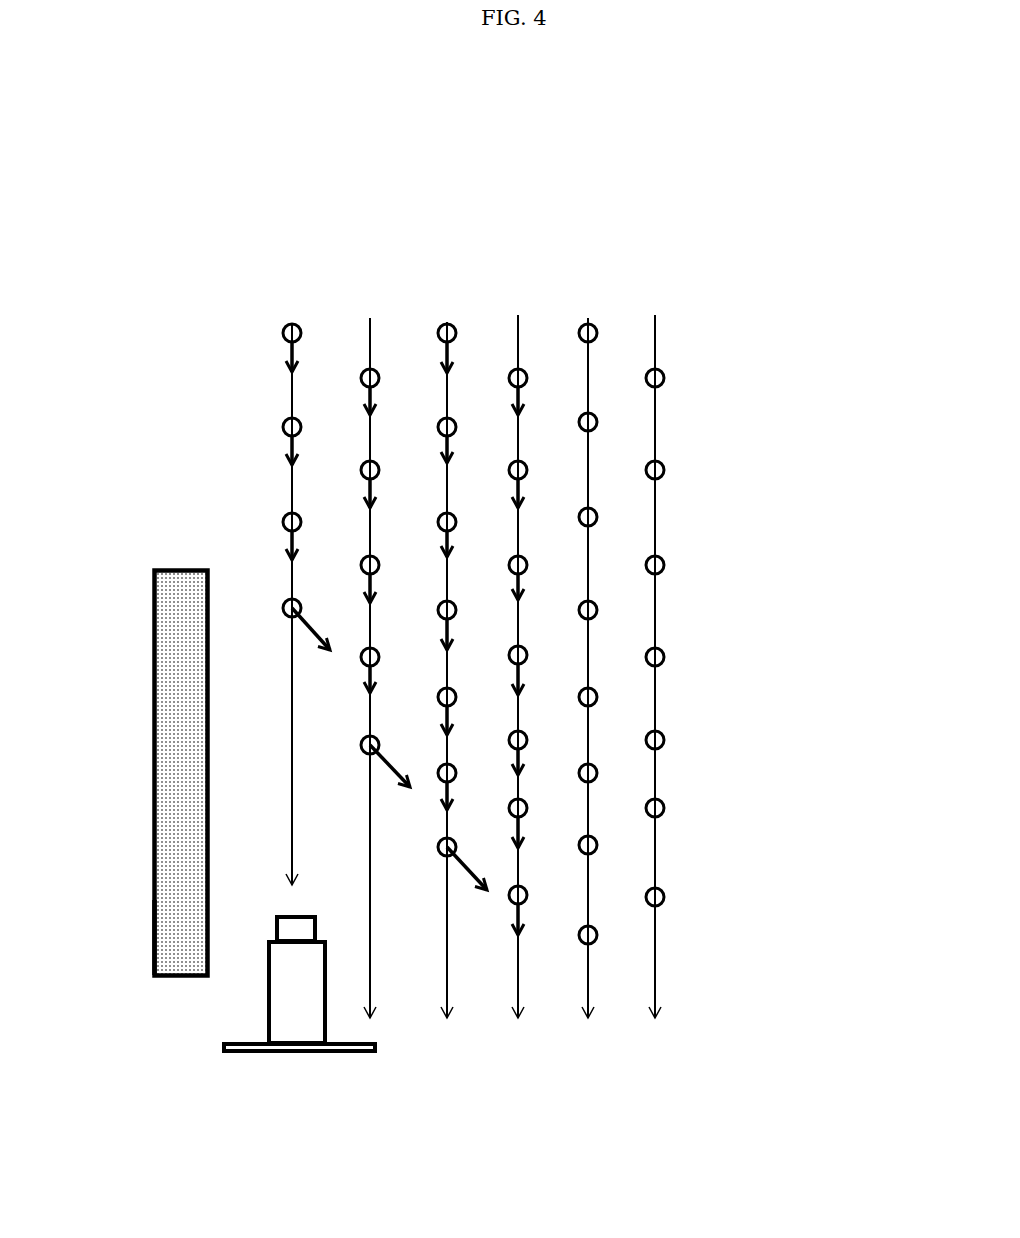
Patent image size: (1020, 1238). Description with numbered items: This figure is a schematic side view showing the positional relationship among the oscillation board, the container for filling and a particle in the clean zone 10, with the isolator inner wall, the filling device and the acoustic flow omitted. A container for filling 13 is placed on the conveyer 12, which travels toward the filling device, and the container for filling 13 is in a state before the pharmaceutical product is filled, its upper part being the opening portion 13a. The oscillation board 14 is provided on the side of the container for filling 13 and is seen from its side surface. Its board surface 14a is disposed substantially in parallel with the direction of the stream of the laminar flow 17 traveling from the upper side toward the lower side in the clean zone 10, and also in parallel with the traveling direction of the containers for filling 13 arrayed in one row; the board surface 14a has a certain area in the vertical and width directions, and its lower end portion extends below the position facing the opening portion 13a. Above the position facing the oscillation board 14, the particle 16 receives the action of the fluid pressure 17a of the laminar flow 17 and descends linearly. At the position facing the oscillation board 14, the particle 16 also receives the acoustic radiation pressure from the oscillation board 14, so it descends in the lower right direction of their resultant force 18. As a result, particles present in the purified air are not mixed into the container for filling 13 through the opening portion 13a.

The clean zone 10 is at (712, 400).
The conveyer 12 is at (300, 1053).
The container for filling 13 is at (295, 992).
The opening portion 13a is at (295, 912).
The oscillation board 14 is at (185, 705).
The board surface 14a is at (232, 808).
The particle 16 is at (283, 334).
The laminar flow 17 is at (650, 343).
The fluid pressure 17a is at (286, 356).
The resultant force 18 is at (290, 628).